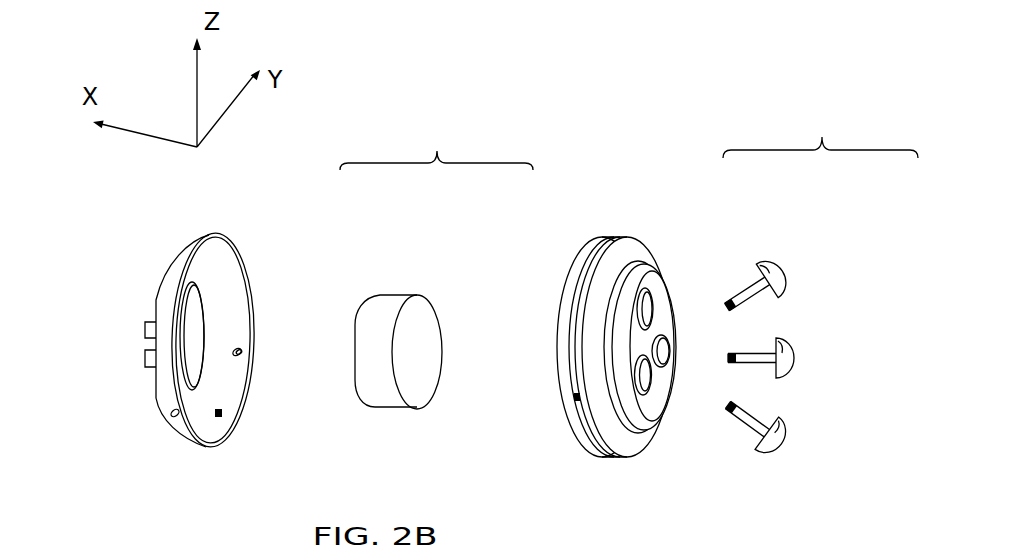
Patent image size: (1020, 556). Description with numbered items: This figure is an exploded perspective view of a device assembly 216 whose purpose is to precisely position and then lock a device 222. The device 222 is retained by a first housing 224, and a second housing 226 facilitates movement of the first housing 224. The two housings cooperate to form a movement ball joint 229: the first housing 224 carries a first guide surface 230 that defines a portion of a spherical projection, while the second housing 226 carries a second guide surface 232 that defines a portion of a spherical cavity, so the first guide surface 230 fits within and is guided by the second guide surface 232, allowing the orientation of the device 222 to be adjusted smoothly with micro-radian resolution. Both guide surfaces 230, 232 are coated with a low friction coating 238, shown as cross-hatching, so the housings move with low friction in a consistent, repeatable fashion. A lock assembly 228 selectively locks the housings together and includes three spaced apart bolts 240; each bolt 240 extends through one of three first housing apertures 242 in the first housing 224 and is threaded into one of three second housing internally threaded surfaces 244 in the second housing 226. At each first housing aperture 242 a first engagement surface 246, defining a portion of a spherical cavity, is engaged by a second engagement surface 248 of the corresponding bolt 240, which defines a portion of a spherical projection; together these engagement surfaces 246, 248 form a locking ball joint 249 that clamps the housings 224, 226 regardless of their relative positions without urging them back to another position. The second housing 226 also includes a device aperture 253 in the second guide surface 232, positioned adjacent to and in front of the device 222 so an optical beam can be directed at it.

The device assembly 216 is at (662, 170).
The device 222 is at (388, 400).
The first housing 224 is at (656, 311).
The second housing 226 is at (242, 318).
The lock assembly 228 is at (805, 358).
The movement ball joint 229 is at (436, 144).
The first guide surface 230 is at (581, 280).
The second guide surface 232 is at (228, 272).
The low friction coating 238 is at (223, 414).
The bolt 240 is at (790, 425).
The first housing aperture 242 is at (644, 297).
The second housing internally threaded surface 244 is at (172, 418).
The first engagement surface 246 is at (658, 337).
The second engagement surface 248 is at (790, 337).
The locking ball joint 249 is at (820, 131).
The device aperture 253 is at (191, 337).